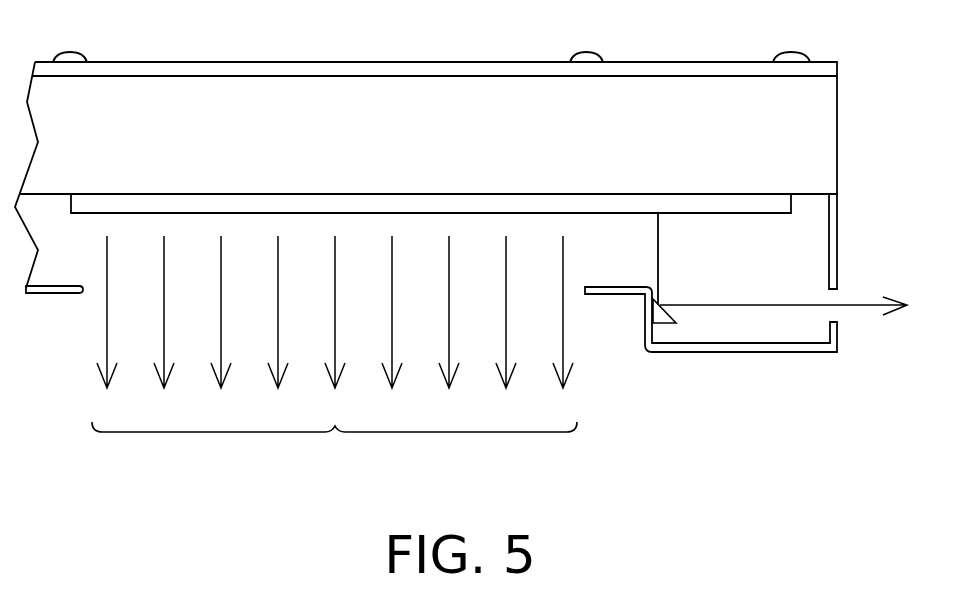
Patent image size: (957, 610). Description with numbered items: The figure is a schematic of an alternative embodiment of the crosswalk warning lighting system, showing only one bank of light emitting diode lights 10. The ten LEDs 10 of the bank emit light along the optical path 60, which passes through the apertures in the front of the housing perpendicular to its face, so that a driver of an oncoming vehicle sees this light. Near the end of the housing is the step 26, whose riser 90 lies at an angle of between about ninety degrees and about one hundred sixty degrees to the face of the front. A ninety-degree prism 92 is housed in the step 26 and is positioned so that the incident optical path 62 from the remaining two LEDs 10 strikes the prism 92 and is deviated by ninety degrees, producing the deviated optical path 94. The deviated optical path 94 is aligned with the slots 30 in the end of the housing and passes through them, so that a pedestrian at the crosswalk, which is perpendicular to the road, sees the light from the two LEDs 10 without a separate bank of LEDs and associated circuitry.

The light emitting diode lights 10 is at (426, 202).
The step 26 is at (798, 352).
The slots 30 is at (832, 299).
The optical path 60 is at (334, 352).
The incident optical path 62 is at (658, 247).
The riser 90 is at (645, 323).
The ninety-degree prism 92 is at (657, 318).
The deviated optical path 94 is at (743, 307).